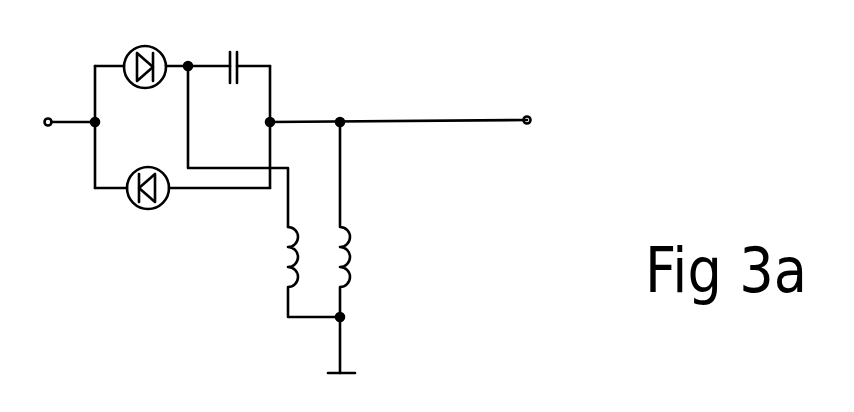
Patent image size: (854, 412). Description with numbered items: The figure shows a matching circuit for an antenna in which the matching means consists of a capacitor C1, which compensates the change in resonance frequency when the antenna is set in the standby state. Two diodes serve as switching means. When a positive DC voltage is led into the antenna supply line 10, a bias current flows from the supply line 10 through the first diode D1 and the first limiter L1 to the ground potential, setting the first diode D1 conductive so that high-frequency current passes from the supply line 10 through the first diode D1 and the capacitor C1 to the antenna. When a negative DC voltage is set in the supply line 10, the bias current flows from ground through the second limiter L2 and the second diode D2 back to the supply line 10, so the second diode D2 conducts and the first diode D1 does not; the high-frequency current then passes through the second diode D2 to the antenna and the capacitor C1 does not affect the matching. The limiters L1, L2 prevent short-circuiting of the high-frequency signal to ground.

The antenna supply line 10 is at (68, 122).
The first diode D1 is at (141, 48).
The second diode D2 is at (182, 171).
The capacitor C1 is at (229, 47).
The first limiter L1 is at (293, 272).
The second limiter L2 is at (366, 219).